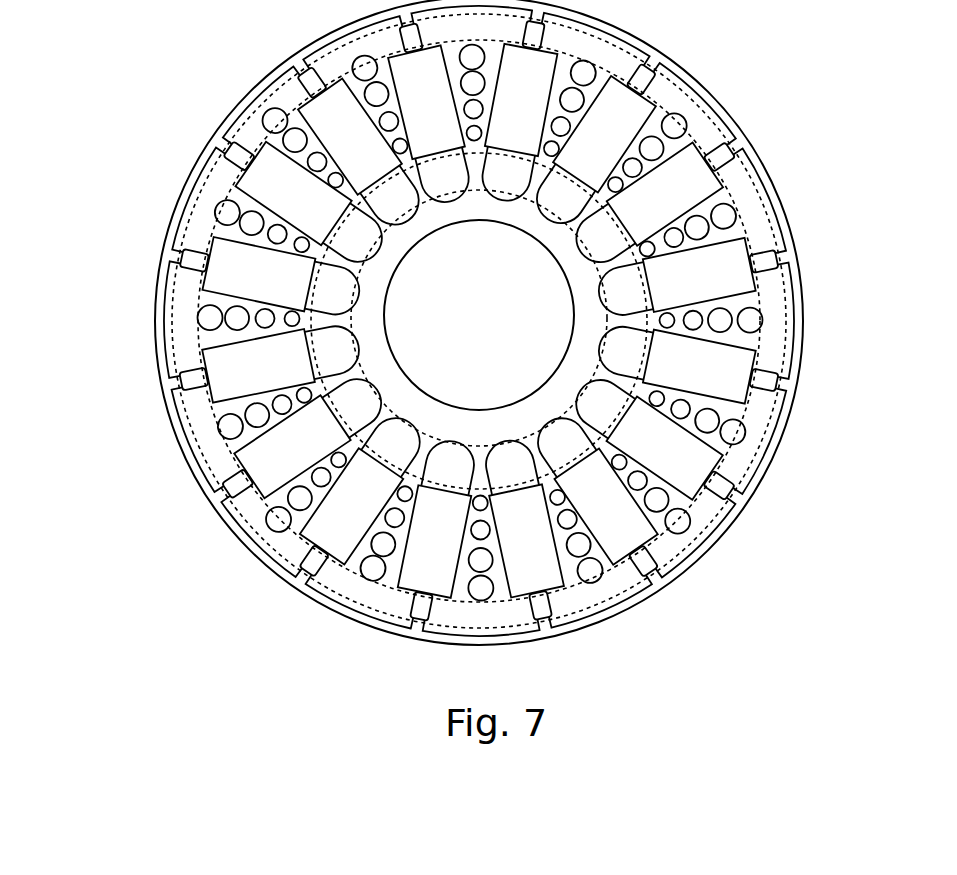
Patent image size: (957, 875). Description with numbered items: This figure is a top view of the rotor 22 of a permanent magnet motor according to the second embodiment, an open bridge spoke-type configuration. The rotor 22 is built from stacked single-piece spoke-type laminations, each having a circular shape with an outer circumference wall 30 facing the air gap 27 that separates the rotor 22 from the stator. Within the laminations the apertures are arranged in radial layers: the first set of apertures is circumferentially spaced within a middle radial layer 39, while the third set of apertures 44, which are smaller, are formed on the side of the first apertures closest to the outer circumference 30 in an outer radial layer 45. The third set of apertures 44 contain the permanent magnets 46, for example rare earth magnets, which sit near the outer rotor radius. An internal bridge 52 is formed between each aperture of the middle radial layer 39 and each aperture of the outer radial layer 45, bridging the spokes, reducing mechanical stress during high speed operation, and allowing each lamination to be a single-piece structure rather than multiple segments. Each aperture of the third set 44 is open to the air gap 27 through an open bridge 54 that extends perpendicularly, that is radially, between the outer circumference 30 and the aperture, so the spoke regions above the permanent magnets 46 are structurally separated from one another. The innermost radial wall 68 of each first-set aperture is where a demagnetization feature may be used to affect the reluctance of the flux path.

The rotor 22 is at (278, 574).
The air gap 27 is at (227, 105).
The outer circumference wall 30 is at (238, 542).
The middle radial layer 39 is at (227, 232).
The third set of apertures 44 is at (193, 398).
The outer radial layer 45 is at (180, 302).
The permanent magnets 46 is at (235, 390).
The internal bridge 52 is at (225, 172).
The open bridge 54 is at (173, 257).
The innermost radial wall 68 is at (222, 140).